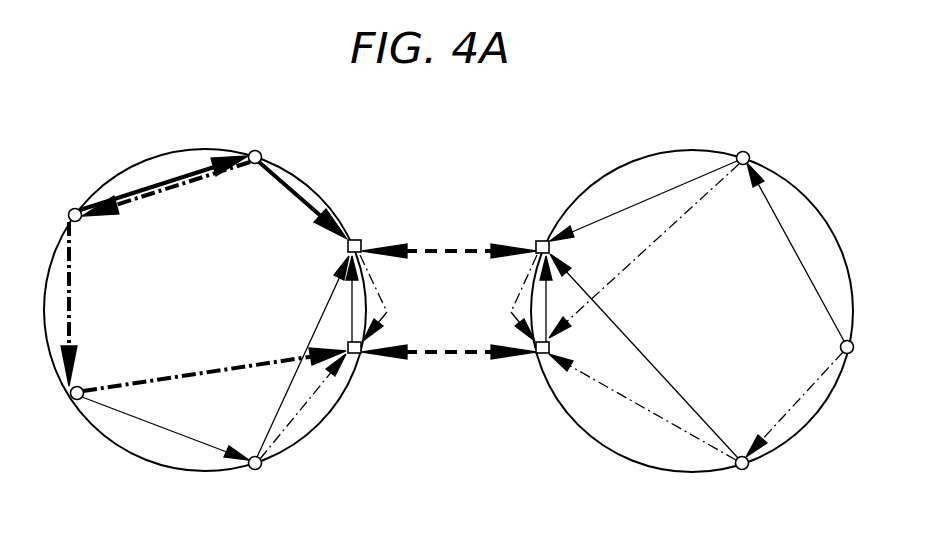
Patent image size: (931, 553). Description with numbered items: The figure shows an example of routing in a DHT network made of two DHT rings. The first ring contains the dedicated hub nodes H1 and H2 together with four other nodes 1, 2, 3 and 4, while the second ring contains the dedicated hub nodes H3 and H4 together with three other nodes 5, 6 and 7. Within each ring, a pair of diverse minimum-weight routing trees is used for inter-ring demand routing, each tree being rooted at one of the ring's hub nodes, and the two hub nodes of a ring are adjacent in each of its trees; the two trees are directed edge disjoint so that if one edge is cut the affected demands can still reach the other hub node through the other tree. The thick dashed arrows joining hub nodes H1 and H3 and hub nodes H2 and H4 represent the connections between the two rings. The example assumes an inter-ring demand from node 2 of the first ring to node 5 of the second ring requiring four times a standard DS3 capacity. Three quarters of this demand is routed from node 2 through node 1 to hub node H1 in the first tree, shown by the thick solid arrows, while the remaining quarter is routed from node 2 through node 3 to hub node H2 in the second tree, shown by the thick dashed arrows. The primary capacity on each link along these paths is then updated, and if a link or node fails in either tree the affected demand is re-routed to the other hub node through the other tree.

The node 1 is at (269, 143).
The node 2 is at (64, 200).
The node 3 is at (64, 412).
The node 4 is at (250, 488).
The node 5 is at (757, 141).
The node 6 is at (862, 360).
The node 7 is at (750, 486).
The hub node H1 is at (373, 224).
The hub node H2 is at (371, 375).
The hub node H3 is at (524, 225).
The hub node H4 is at (524, 375).